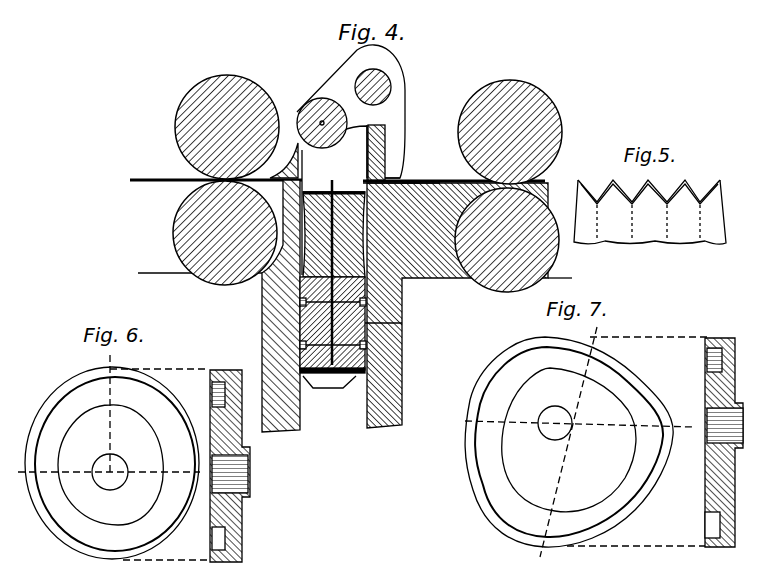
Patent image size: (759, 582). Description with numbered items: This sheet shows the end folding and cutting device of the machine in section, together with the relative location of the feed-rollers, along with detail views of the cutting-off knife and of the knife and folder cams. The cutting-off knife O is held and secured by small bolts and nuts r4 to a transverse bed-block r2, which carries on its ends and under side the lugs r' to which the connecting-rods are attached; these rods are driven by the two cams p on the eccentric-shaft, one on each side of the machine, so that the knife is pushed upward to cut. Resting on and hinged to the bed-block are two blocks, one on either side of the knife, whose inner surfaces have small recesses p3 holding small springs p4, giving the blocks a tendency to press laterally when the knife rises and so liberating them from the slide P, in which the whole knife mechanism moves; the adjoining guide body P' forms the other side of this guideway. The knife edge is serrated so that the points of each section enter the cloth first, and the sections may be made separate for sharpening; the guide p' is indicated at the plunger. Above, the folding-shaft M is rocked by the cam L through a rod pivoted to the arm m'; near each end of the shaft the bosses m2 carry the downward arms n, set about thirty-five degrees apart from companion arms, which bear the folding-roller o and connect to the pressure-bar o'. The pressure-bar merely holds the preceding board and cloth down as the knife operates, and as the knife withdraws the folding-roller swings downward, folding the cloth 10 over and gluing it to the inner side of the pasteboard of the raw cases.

In FIG. 4, the folding-shaft M is at (393, 82).
In FIG. 4, the boss m2 is at (388, 67).
In FIG. 4, the arm m' is at (384, 152).
In FIG. 4, the arm n is at (322, 115).
In FIG. 4, the folding-roller o is at (338, 119).
In FIG. 4, the pressure-bar o' is at (392, 162).
In FIG. 4, the cutting-off knife O is at (334, 171).
In FIG. 5, the cutting-off knife O is at (650, 212).
In FIG. 4, the cloth 10 is at (395, 135).
In FIG. 4, the plunger p' is at (332, 268).
In FIG. 4, the recess p3 is at (401, 178).
In FIG. 4, the spring p4 is at (408, 181).
In FIG. 4, the slide P is at (263, 306).
In FIG. 4, the right guide block P' is at (457, 305).
In FIG. 4, the bolt and nut r4 is at (300, 302).
In FIG. 4, the bed-block r2 is at (363, 323).
In FIG. 4, the lug r' is at (329, 393).
In FIG. 6, the cam p is at (144, 458).
In FIG. 7, the cam L is at (604, 442).